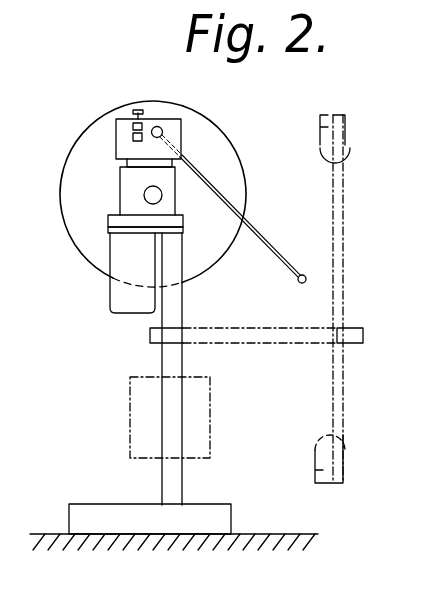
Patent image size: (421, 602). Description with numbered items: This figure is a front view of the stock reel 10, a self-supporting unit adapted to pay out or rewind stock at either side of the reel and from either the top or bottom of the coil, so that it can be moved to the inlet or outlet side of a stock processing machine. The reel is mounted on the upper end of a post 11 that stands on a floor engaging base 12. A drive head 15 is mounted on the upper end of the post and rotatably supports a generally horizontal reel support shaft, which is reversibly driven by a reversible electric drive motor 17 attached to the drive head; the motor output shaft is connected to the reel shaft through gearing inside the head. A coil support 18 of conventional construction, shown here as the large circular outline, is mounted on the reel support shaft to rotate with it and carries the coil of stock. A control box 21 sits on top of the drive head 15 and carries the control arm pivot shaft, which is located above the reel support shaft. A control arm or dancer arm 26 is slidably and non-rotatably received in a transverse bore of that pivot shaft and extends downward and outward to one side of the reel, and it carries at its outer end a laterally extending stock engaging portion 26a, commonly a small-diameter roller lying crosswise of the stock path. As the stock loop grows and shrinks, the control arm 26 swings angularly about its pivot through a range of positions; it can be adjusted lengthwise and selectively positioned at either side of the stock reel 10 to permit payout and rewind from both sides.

The stock reel 10 is at (240, 130).
The post 11 is at (182, 481).
The floor engaging base 12 is at (228, 521).
The drive head 15 is at (125, 180).
The reversible electric drive motor 17 is at (117, 302).
The coil support 18 is at (70, 155).
The control box 21 is at (118, 119).
The control arm 26 is at (220, 192).
The stock engaging portion 26a is at (298, 284).